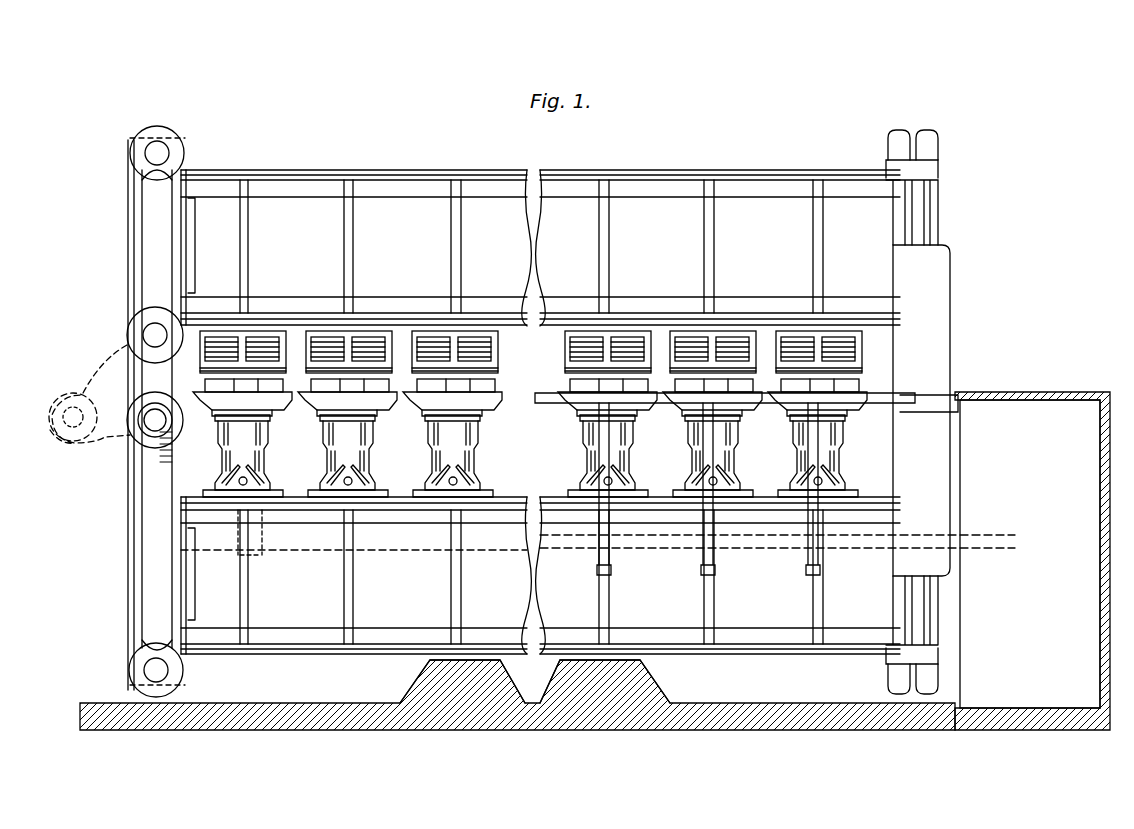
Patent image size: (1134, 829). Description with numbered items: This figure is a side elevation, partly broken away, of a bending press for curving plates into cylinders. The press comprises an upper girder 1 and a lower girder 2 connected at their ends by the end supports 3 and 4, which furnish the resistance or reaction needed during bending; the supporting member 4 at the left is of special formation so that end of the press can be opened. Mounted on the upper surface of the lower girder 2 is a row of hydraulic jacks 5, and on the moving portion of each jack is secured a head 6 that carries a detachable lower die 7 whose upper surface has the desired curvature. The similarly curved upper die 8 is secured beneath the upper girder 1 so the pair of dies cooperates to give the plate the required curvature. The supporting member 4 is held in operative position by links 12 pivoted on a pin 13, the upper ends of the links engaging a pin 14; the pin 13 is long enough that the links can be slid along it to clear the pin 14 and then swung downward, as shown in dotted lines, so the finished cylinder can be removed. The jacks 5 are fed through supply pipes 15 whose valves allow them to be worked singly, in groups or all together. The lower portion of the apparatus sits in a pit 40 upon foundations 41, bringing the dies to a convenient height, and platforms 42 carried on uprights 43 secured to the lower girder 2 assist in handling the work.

The upper girder 1 is at (540, 248).
The lower girder 2 is at (540, 575).
The end support 3 is at (918, 412).
The end support 4 is at (150, 280).
The hydraulic jack 5 is at (270, 458).
The head 6 is at (530, 406).
The lower die 7 is at (470, 378).
The upper die 8 is at (850, 372).
The link 12 is at (150, 376).
The pin 13 is at (152, 422).
The pin 14 is at (152, 337).
The supply pipe 15 is at (318, 515).
The pit 40 is at (1030, 554).
The foundation 41 is at (425, 685).
The platform 42 is at (548, 393).
The upright 43 is at (810, 538).